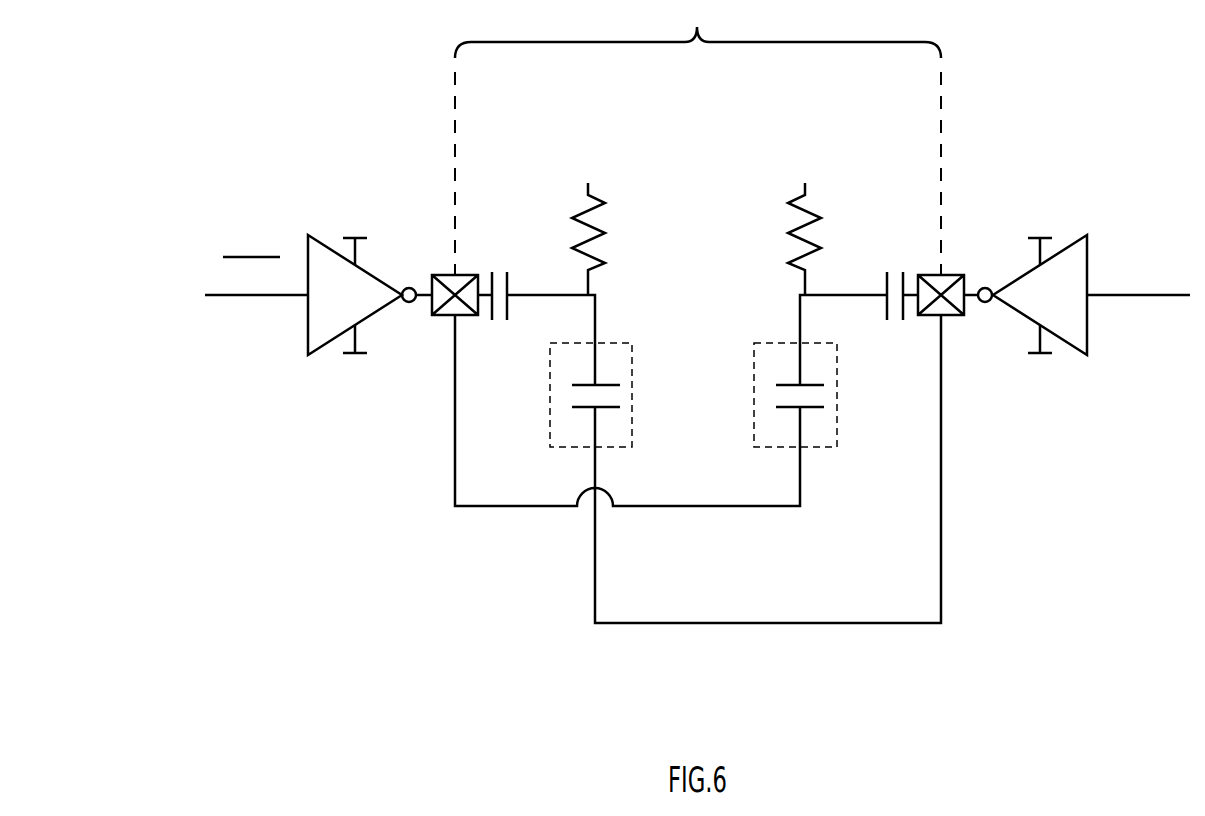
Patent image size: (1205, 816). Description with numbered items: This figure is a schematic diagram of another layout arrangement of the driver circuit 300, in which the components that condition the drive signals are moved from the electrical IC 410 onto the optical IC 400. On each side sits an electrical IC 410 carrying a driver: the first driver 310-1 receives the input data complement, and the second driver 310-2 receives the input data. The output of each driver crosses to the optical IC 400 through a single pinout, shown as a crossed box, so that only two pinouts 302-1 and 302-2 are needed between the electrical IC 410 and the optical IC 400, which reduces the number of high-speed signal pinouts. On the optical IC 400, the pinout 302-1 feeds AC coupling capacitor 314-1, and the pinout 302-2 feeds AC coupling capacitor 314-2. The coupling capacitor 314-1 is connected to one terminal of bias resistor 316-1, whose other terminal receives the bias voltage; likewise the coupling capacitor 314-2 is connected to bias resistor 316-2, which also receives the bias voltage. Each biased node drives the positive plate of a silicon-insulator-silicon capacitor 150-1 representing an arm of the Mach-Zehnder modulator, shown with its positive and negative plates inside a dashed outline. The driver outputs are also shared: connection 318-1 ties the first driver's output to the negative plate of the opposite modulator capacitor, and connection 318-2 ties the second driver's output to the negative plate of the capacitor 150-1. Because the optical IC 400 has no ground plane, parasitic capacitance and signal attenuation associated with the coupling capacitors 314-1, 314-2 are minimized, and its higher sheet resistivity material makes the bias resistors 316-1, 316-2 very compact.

The driver circuit 300 is at (143, 55).
The optical IC 400 is at (698, 138).
The electrical IC 410 is at (322, 167).
The first driver 310-1 is at (308, 323).
The second driver 310-2 is at (1087, 323).
The IC pinout 302-1 is at (433, 304).
The IC pinout 302-2 is at (952, 316).
The AC coupling capacitor 314-1 is at (508, 307).
The AC coupling capacitor 314-2 is at (886, 307).
The bias resistor 316-1 is at (577, 222).
The bias resistor 316-2 is at (816, 222).
The SISCAP 150-1 is at (550, 388).
The connection 318-1 is at (468, 507).
The connection 318-2 is at (912, 624).